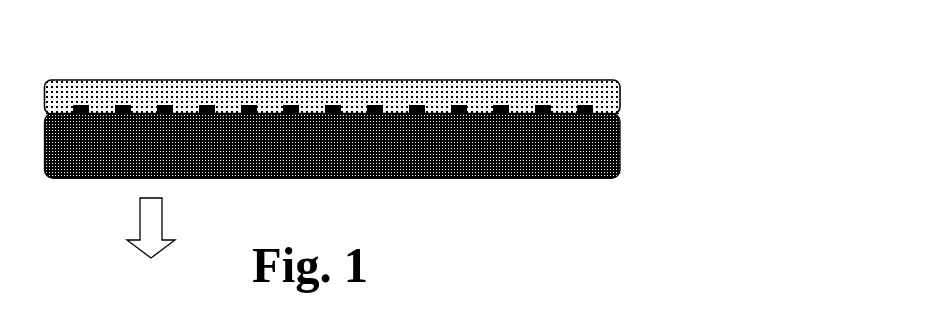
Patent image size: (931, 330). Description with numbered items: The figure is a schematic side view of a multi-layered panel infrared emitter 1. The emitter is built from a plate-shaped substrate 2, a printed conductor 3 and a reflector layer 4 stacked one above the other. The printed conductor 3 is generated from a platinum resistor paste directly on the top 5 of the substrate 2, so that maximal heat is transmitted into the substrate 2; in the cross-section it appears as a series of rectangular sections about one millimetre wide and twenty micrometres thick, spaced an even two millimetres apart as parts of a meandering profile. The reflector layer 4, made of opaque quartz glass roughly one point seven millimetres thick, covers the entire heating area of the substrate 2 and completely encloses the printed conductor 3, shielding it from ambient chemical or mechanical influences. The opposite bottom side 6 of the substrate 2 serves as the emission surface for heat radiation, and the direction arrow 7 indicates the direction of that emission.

The infrared emitter 1 is at (362, 147).
The substrate 2 is at (88, 157).
The printed conductor 3 is at (422, 107).
The reflector layer 4 is at (150, 95).
The top 5 is at (332, 59).
The bottom side 6 is at (332, 223).
The direction arrow 7 is at (155, 233).